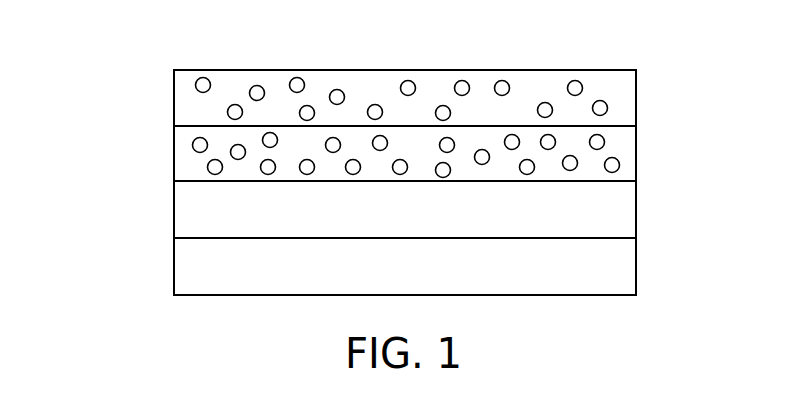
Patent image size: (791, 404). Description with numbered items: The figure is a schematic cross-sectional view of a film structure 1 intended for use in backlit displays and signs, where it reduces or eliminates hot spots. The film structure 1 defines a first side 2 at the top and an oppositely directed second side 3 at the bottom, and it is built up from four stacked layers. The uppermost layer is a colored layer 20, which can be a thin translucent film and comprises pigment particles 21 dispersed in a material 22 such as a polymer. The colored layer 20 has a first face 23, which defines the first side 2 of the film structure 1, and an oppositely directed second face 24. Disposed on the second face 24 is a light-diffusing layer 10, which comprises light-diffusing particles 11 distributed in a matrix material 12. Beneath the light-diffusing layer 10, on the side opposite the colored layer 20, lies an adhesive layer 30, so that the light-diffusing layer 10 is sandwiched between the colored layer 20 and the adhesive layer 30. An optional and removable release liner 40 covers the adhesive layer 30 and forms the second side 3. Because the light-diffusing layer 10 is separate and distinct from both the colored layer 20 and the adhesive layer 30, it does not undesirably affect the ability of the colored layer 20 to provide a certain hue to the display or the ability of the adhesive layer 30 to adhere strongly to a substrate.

The film structure 1 is at (82, 81).
The first side 2 is at (230, 69).
The second side 3 is at (236, 297).
The light-diffusing layer 10 is at (636, 165).
The light-diffusing particles 11 is at (604, 141).
The matrix material 12 is at (238, 172).
The colored layer 20 is at (636, 95).
The pigment particles 21 is at (409, 81).
The material 22 is at (540, 90).
The first face 23 is at (317, 69).
The second face 24 is at (242, 127).
The adhesive layer 30 is at (174, 225).
The release liner 40 is at (174, 281).